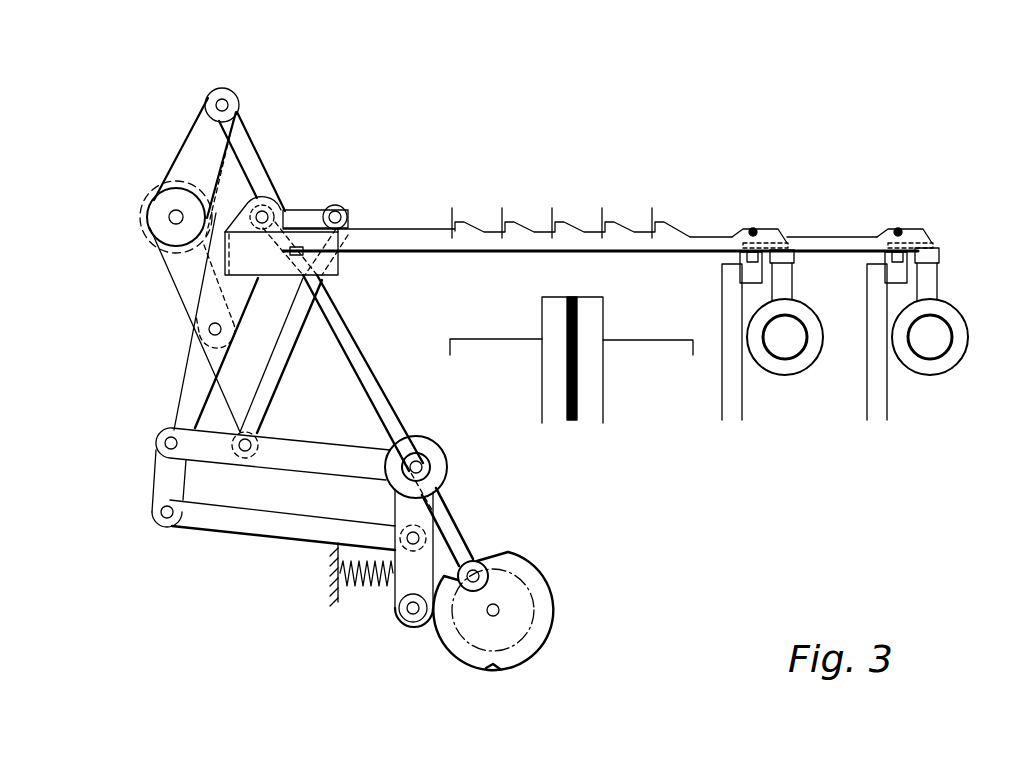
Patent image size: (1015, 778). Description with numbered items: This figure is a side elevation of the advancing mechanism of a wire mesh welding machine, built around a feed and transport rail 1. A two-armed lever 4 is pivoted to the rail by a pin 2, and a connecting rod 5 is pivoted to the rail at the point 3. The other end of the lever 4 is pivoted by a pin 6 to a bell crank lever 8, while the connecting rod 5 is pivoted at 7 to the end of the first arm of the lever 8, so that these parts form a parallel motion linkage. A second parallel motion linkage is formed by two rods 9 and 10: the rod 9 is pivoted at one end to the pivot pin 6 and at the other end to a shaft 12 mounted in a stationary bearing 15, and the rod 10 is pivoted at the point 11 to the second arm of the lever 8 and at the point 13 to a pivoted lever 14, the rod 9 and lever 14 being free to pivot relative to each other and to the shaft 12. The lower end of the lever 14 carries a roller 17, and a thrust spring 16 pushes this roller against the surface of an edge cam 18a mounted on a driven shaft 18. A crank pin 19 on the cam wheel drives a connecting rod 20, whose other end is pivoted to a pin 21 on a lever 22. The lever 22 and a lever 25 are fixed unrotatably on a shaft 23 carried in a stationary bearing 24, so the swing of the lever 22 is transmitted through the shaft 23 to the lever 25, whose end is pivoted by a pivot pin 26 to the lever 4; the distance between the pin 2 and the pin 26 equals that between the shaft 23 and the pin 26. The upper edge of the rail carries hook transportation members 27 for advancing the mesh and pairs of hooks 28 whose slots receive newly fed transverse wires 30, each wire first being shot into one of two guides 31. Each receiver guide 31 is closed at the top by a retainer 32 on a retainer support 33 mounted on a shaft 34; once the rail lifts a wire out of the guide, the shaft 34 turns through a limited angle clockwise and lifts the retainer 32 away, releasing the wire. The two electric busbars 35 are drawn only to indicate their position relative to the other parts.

The feed and transport rail 1 is at (427, 240).
The pin 2 is at (265, 210).
The point 3 is at (335, 207).
The two-armed lever 4 is at (186, 362).
The connecting rod 5 is at (285, 364).
The pin 6 is at (163, 443).
The pivot point 7 is at (242, 458).
The bell crank lever 8 is at (155, 478).
The rod 9 is at (273, 448).
The rod 10 is at (282, 531).
The point 11 is at (158, 513).
The shaft 12 is at (436, 485).
The point 13 is at (422, 538).
The pivoted lever 14 is at (407, 510).
The stationary bearing 15 is at (438, 463).
The thrust spring 16 is at (377, 587).
The roller 17 is at (397, 622).
The driven shaft 18 is at (500, 607).
The edge cam 18a is at (540, 627).
The crank pin 19 is at (482, 571).
The connecting rod 20 is at (345, 331).
The pin 21 is at (228, 105).
The lever 22 is at (202, 127).
The shaft 23 is at (172, 218).
The stationary bearing 24 is at (147, 203).
The lever 25 is at (186, 299).
The pivot pin 26 is at (209, 329).
The hook transportation members 27 is at (567, 235).
The pairs of hooks 28 is at (740, 232).
The transverse wires 30 is at (765, 227).
The receiver guide 31 is at (748, 270).
The retainer 32 is at (785, 245).
The retainer support 33 is at (813, 343).
The shaft 34 is at (792, 342).
The electric busbars 35 is at (556, 415).